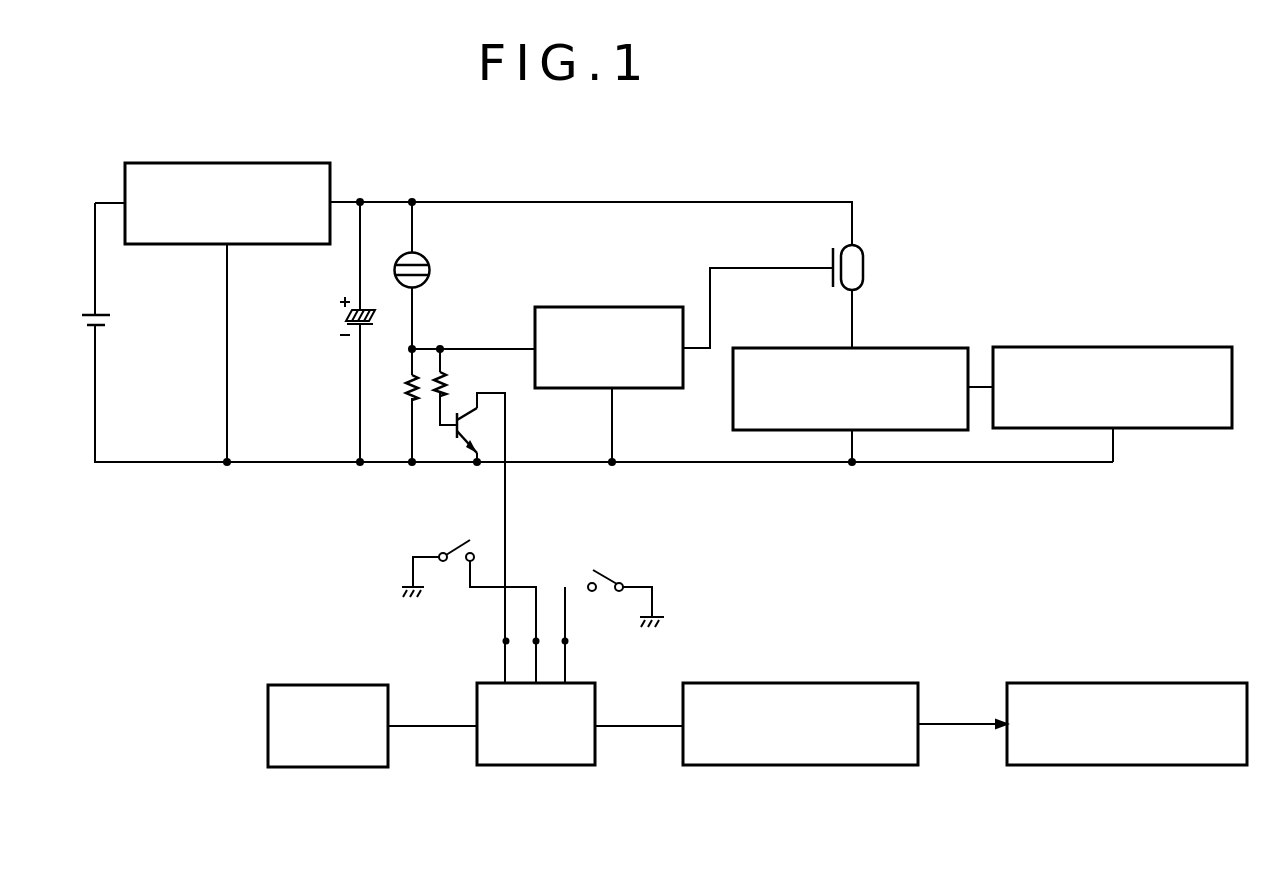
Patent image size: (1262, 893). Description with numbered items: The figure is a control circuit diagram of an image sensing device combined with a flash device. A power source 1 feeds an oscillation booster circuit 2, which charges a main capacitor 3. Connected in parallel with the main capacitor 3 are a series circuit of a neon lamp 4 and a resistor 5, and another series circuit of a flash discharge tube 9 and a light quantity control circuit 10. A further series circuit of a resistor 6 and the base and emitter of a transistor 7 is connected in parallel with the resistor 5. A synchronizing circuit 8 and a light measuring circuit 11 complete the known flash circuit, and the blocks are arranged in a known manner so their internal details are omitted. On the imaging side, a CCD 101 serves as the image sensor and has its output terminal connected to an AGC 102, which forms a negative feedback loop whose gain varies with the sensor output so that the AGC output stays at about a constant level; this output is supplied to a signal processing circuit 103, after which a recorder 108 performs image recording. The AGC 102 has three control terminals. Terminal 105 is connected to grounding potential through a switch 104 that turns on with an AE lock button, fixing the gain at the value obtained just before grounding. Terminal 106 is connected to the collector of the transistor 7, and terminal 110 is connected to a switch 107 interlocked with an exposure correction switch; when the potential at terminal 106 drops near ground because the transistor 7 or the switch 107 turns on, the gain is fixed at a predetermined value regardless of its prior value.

The power source 1 is at (110, 318).
The oscillation booster circuit 2 is at (267, 162).
The main capacitor 3 is at (343, 312).
The neon lamp 4 is at (430, 266).
The resistor 5 is at (407, 383).
The resistor 6 is at (447, 378).
The transistor 7 is at (465, 425).
The synchronizing circuit 8 is at (625, 307).
The flash discharge tube 9 is at (865, 257).
The light quantity control circuit 10 is at (797, 347).
The light measuring circuit 11 is at (1065, 347).
The CCD 101 is at (318, 685).
The AGC 102 is at (503, 765).
The signal processing circuit 103 is at (830, 683).
The switch 104 is at (603, 572).
The control terminal 105 is at (569, 642).
The control terminal 106 is at (500, 642).
The switch 107 is at (458, 542).
The recorder 108 is at (1153, 683).
The control terminal 110 is at (540, 637).